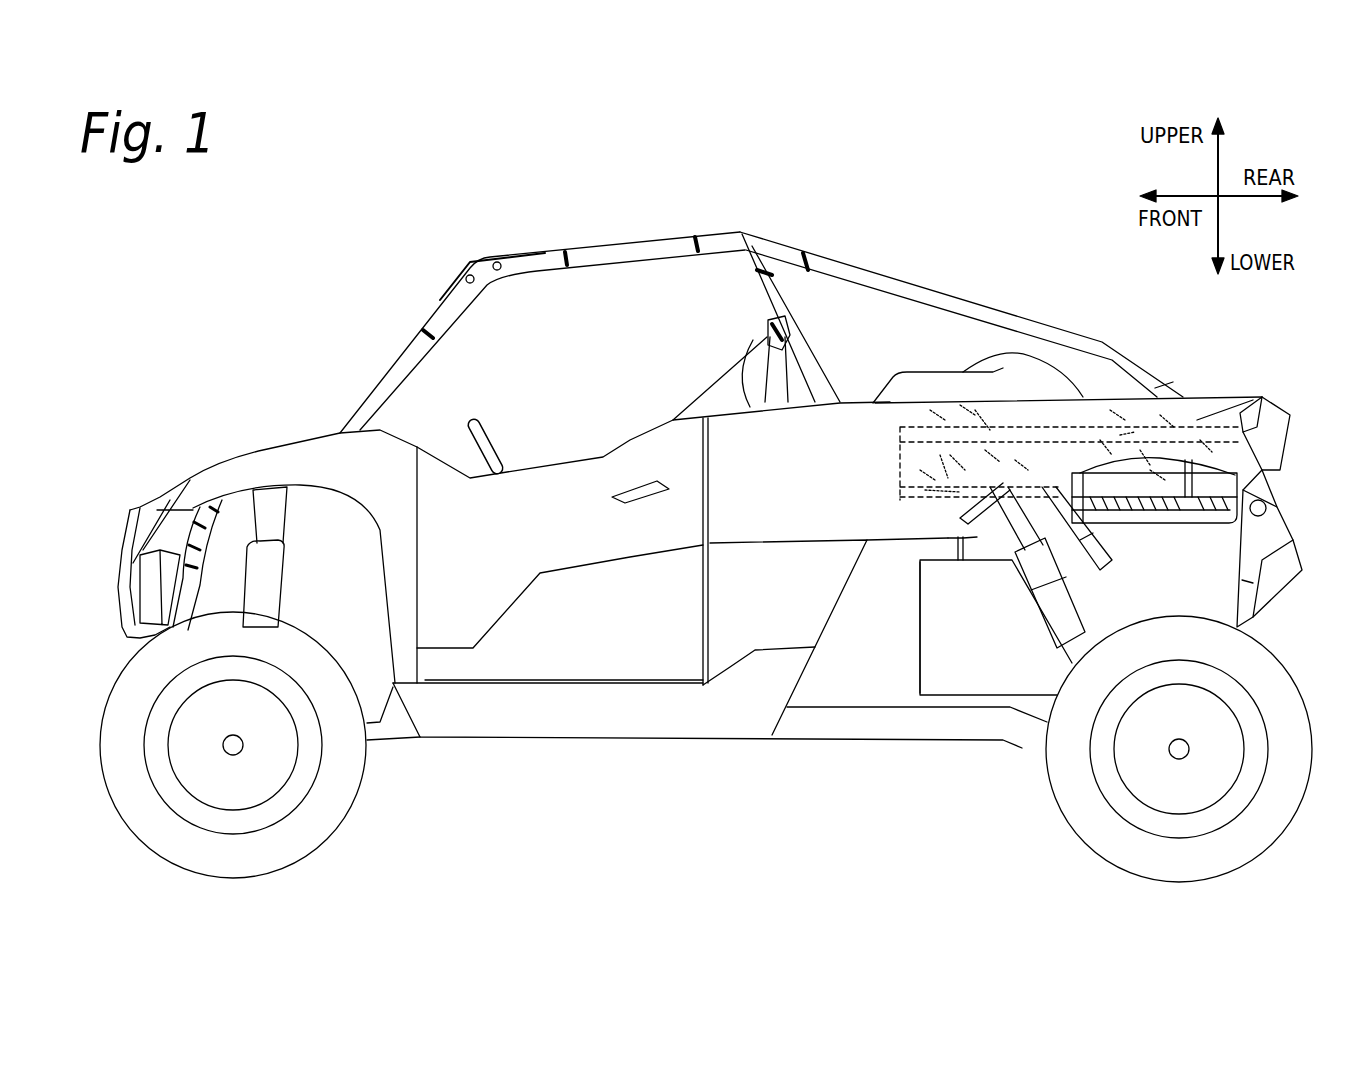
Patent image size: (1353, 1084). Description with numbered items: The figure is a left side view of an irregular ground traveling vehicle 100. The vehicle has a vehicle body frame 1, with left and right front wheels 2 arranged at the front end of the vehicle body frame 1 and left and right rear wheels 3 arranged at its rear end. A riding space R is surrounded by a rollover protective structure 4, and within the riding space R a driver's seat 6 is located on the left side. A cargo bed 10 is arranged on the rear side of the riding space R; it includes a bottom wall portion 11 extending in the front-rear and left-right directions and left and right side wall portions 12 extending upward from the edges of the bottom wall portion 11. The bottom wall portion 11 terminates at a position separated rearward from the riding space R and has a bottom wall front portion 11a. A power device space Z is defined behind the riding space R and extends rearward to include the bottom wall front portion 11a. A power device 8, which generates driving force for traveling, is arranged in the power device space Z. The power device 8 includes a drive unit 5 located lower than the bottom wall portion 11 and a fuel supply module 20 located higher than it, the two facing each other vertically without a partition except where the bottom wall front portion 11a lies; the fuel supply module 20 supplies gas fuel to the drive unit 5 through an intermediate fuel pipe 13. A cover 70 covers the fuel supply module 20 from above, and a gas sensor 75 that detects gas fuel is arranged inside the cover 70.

The irregular ground traveling vehicle 100 is at (372, 323).
The vehicle body frame 1 is at (1180, 390).
The front wheels 2 is at (352, 790).
The rear wheels 3 is at (1048, 788).
The rollover protective structure 4 is at (884, 266).
The drive unit 5 is at (1016, 644).
The driver's seat 6 is at (757, 340).
The power device 8 is at (910, 585).
The cargo bed 10 is at (1272, 510).
The bottom wall portion 11 is at (1135, 520).
The bottom wall front portion 11a is at (1083, 520).
The side wall portions 12 is at (1252, 420).
The intermediate fuel pipe 13 is at (957, 545).
The fuel supply module 20 is at (990, 385).
The cover 70 is at (922, 372).
The gas sensor 75 is at (1045, 352).
The riding space R is at (620, 369).
The power device space Z is at (910, 674).